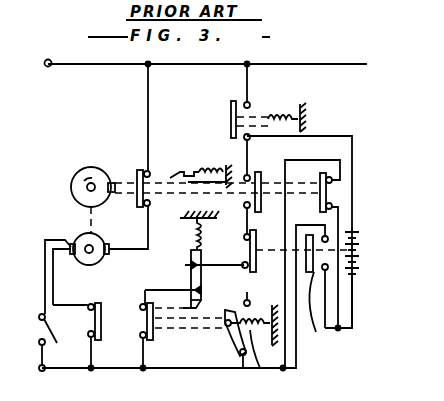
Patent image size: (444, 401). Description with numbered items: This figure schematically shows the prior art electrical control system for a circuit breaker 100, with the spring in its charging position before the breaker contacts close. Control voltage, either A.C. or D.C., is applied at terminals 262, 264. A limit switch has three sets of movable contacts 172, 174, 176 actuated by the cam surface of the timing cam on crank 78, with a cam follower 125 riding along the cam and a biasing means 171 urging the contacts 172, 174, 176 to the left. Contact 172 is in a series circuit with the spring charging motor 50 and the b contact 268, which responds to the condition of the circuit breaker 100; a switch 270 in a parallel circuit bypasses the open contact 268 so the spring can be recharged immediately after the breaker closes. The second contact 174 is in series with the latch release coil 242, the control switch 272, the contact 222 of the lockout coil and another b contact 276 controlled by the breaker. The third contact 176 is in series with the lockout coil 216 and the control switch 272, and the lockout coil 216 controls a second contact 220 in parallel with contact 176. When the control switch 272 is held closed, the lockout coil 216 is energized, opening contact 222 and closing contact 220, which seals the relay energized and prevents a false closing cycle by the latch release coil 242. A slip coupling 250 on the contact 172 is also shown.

The terminal 262 is at (49, 67).
The control switch 272 is at (258, 110).
The timing cam 78 is at (80, 169).
The cam follower 125 is at (137, 171).
The limit switch contact 172 is at (184, 169).
The biasing means 171 is at (212, 180).
The limit switch contact 174 is at (255, 177).
The limit switch contact 176 is at (333, 181).
The spring charging motor 50 is at (76, 234).
The slip coupling 250 is at (184, 219).
The lockout coil 216 is at (358, 254).
The latch release coil 242 is at (189, 274).
The contact 222 is at (257, 266).
The switch 270 is at (40, 319).
The b contact 268 is at (107, 311).
The b contact 276 is at (156, 340).
The contact 220 is at (325, 295).
The circuit breaker 100 is at (262, 362).
The terminal 264 is at (44, 372).